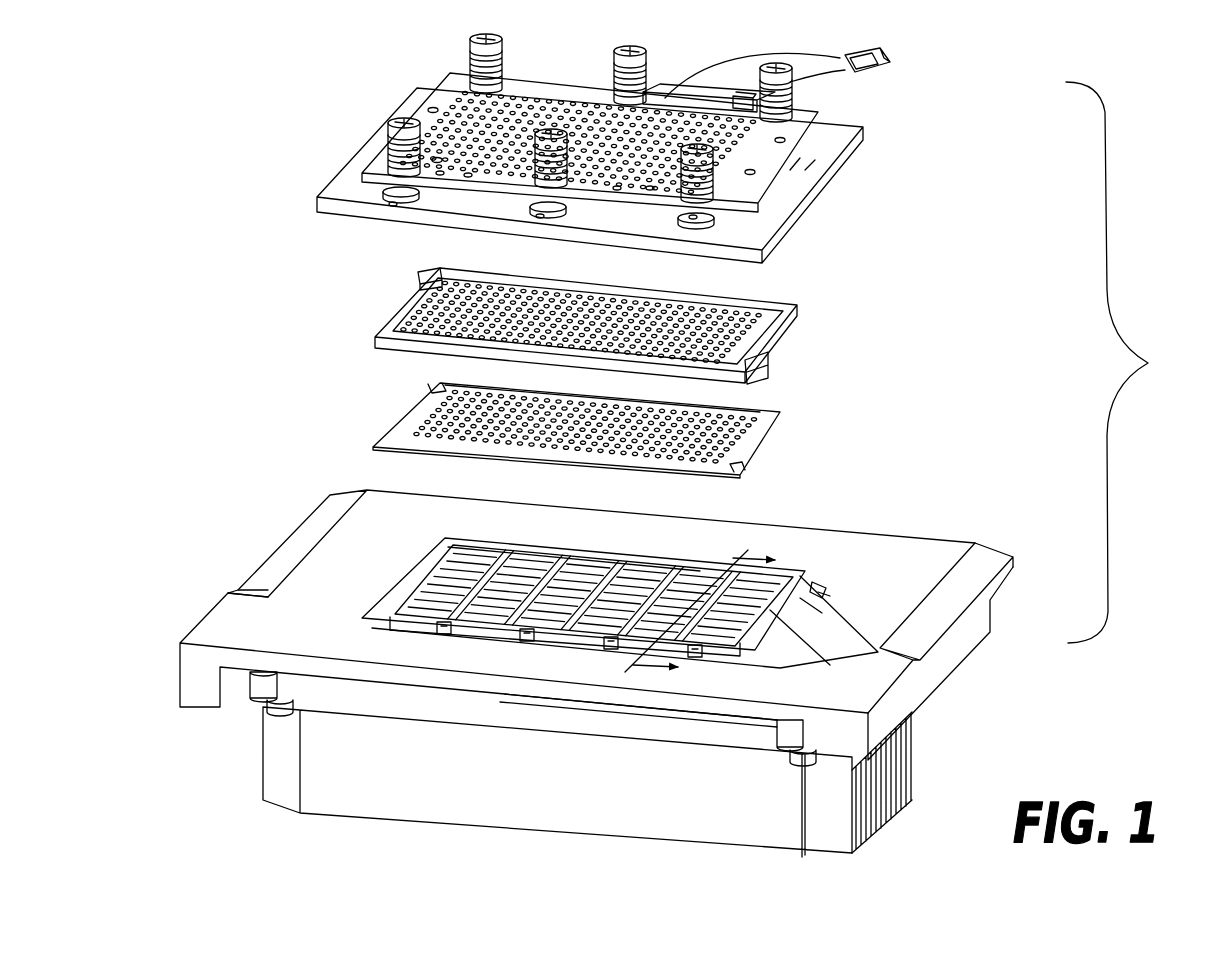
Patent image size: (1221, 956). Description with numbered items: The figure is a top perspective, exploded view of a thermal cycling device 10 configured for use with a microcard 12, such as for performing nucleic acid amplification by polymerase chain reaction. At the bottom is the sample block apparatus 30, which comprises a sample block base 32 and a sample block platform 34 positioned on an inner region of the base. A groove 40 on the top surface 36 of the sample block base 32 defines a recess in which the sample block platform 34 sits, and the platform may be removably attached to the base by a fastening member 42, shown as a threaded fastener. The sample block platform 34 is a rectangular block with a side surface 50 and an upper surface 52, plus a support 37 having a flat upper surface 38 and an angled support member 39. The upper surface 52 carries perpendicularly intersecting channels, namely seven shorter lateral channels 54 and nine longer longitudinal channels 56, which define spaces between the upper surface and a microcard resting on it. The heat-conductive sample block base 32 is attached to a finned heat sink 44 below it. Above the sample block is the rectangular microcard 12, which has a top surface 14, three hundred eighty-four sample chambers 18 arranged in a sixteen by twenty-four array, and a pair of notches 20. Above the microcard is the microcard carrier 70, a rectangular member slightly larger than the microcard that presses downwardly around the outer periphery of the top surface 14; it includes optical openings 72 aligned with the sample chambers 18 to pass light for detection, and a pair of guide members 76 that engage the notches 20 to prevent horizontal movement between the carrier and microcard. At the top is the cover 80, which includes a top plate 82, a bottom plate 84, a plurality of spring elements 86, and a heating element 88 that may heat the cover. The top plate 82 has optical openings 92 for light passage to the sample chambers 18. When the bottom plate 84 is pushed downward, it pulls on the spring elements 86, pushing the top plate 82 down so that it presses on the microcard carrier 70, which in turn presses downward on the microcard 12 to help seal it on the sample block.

The thermal cycling device 10 is at (692, 437).
The microcard 12 is at (629, 432).
The top surface 14 is at (778, 422).
The sample chambers 18 is at (735, 445).
The notches 20 is at (742, 473).
The sample block apparatus 30 is at (623, 662).
The sample block base 32 is at (960, 597).
The sample block platform 34 is at (800, 577).
The top surface 36 is at (922, 560).
The support 37 is at (820, 585).
The flat upper surface 38 is at (780, 625).
The angled support member 39 is at (810, 607).
The groove 40 is at (825, 590).
The fastening member 42 is at (607, 640).
The finned heat sink 44 is at (890, 808).
The side surface 50 is at (588, 607).
The upper surface 52 is at (757, 590).
The lateral channels 54 is at (550, 577).
The longitudinal channels 56 is at (587, 577).
The microcard carrier 70 is at (633, 315).
The optical openings 72 is at (712, 302).
The guide members 76 is at (757, 369).
The cover 80 is at (626, 140).
The top plate 82 is at (818, 122).
The bottom plate 84 is at (787, 213).
The spring elements 86 is at (614, 82).
The heating element 88 is at (683, 97).
The optical openings 92 is at (715, 127).